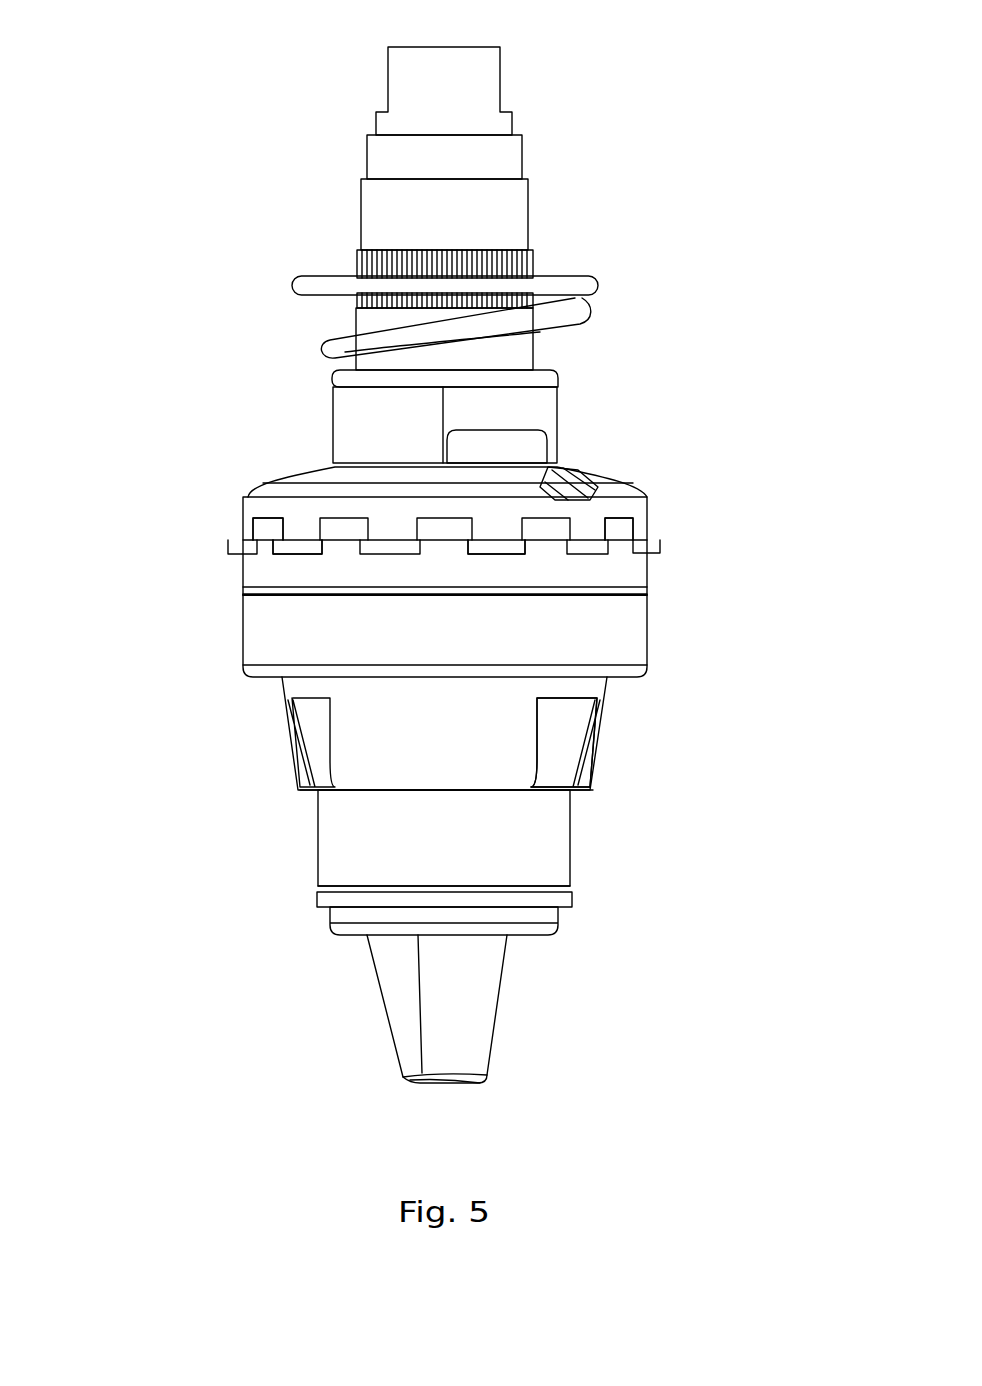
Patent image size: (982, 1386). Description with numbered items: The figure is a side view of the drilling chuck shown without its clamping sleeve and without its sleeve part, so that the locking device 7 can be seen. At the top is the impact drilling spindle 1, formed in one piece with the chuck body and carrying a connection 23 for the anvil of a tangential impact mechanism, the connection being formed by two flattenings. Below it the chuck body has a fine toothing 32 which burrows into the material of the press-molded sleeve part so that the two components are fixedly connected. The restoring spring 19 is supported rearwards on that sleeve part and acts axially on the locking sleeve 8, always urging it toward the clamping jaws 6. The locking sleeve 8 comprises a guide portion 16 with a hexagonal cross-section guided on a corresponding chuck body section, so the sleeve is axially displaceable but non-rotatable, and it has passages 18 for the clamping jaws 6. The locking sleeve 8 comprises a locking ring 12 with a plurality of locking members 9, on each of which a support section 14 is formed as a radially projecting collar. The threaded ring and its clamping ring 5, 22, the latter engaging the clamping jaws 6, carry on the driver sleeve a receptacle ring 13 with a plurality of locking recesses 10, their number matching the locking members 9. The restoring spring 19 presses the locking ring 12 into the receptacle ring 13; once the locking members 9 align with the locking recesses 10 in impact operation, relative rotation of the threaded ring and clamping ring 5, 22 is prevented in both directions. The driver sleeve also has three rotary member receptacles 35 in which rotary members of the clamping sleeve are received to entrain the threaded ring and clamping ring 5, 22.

The impact drilling spindle 1 is at (500, 212).
The connection 23 is at (482, 84).
The fine toothing 32 is at (400, 275).
The restoring spring 19 is at (320, 285).
The guide portion 16 is at (377, 427).
The passages 18 is at (550, 483).
The locking device 7 is at (640, 474).
The locking sleeve 8 is at (342, 478).
The locking members 9 is at (583, 528).
The receptacle ring 13 is at (270, 533).
The support section 14 is at (295, 550).
The locking recess 10 is at (615, 528).
The locking ring 12 is at (500, 533).
The nozzle body / receptacle 5, 22 is at (420, 757).
The rotary member receptacle 35 is at (565, 700).
The clamping jaws 6 is at (395, 973).